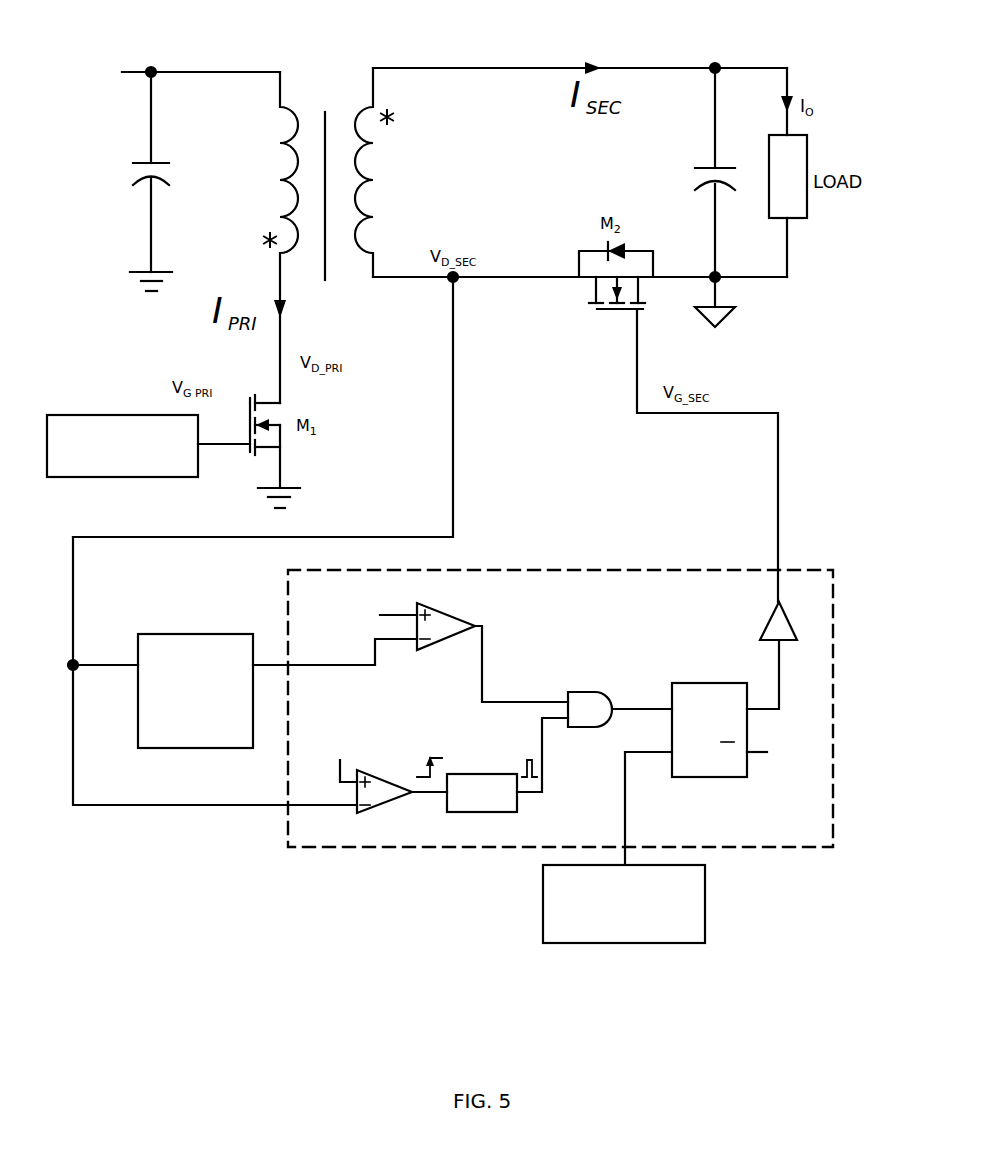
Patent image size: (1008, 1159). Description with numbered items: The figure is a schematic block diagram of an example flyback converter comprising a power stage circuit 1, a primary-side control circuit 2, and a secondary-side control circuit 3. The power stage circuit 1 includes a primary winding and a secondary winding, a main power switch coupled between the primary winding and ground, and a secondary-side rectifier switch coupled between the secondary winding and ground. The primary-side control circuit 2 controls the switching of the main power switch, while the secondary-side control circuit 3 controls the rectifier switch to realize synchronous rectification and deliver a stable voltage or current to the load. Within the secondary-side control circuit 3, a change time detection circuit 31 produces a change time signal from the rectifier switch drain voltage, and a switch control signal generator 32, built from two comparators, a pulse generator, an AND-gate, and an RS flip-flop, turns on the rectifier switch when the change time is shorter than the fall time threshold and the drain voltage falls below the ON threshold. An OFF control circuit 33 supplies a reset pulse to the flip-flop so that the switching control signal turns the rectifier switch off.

The power stage circuit 1 is at (316, 52).
The primary-side control circuit 2 is at (138, 415).
The secondary-side control circuit 3 is at (180, 872).
The change time detection circuit 31 is at (181, 634).
The switch control signal generator 32 is at (611, 570).
The OFF control circuit 33 is at (613, 943).